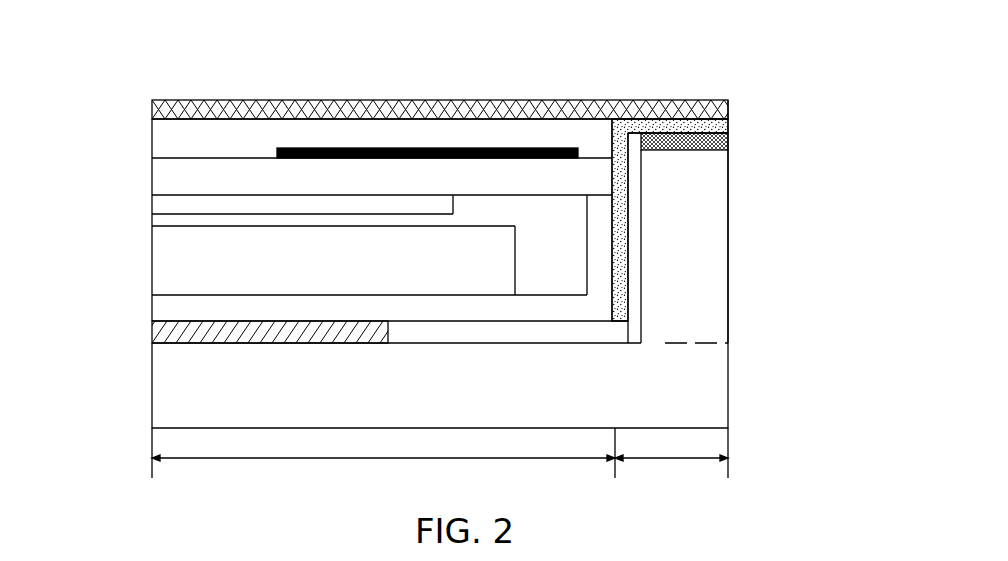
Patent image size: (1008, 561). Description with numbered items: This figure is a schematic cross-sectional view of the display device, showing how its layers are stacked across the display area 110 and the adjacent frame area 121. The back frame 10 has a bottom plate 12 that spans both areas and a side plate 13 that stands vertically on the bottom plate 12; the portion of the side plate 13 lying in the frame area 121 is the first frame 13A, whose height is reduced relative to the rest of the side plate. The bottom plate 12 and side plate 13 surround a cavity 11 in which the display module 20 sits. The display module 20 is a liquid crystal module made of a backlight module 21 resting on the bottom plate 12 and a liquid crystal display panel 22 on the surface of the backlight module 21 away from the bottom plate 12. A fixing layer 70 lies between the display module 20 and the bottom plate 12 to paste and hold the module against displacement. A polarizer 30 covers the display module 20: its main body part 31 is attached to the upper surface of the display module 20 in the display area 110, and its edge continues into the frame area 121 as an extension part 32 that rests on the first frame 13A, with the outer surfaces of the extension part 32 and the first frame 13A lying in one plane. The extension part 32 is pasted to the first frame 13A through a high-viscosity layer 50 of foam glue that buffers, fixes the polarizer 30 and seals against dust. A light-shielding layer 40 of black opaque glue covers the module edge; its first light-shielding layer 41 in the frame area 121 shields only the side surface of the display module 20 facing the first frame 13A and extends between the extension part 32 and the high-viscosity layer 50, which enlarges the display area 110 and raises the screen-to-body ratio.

The back frame 10 is at (728, 323).
The cavity 11 is at (440, 332).
The bottom plate 12 is at (713, 391).
The side plate 13 is at (713, 263).
The first frame 13A is at (757, 246).
The display module 20 is at (326, 220).
The backlight module 21 is at (147, 225).
The liquid crystal display panel 22 is at (352, 167).
The polarizer 30 is at (440, 71).
The main body part 31 is at (580, 108).
The extension part 32 is at (623, 105).
The light-shielding layer 40 is at (670, 119).
The first light-shielding layer 41 is at (700, 194).
The high-viscosity layer 50 is at (728, 145).
The fixing layer 70 is at (152, 336).
The display area 110 is at (383, 460).
The frame area 121 is at (671, 460).